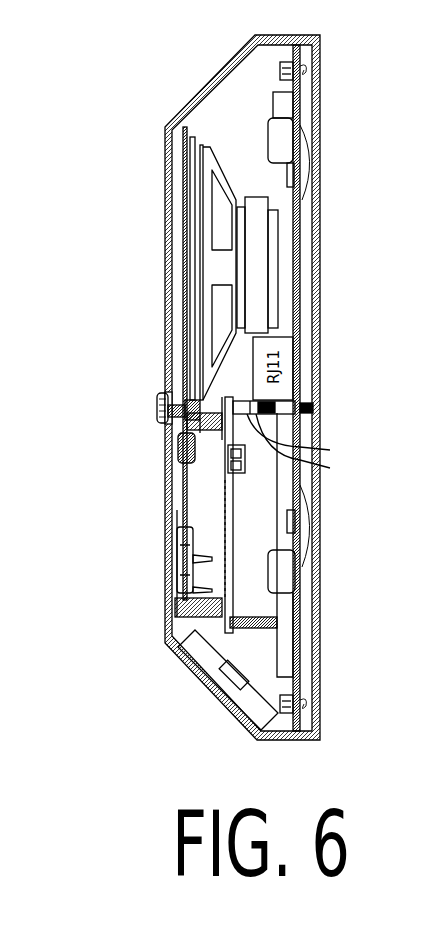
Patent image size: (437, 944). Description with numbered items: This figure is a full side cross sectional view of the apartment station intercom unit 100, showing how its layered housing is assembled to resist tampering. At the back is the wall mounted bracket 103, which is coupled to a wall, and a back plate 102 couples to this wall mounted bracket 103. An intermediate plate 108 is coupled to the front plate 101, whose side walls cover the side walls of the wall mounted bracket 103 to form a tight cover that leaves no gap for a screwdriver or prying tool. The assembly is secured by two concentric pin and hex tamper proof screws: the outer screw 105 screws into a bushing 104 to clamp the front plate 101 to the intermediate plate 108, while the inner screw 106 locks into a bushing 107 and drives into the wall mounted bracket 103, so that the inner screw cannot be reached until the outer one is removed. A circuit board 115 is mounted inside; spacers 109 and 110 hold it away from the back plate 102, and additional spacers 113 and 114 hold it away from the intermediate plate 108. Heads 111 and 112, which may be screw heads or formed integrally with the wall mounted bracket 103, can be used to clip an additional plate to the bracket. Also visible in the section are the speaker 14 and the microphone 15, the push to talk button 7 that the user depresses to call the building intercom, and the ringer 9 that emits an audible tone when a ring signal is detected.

The apartment station intercom unit 100 is at (149, 267).
The front plate 101 is at (167, 370).
The back plate 102 is at (296, 338).
The wall mounted bracket 103 is at (315, 398).
The bushing 104 is at (167, 377).
The tamper proof screw 105 is at (157, 414).
The tamper proof screw 106 is at (330, 450).
The bushing 107 is at (287, 417).
The intermediate plate 108 is at (183, 333).
The spacer 109 is at (330, 468).
The spacer 110 is at (260, 630).
The head 111 is at (291, 175).
The head 112 is at (294, 522).
The spacer 113 is at (192, 618).
The spacer 114 is at (208, 442).
The circuit board 115 is at (227, 508).
The speaker 14 is at (280, 307).
The microphone 15 is at (178, 452).
The push to talk button 7 is at (163, 580).
The ringer 9 is at (195, 655).